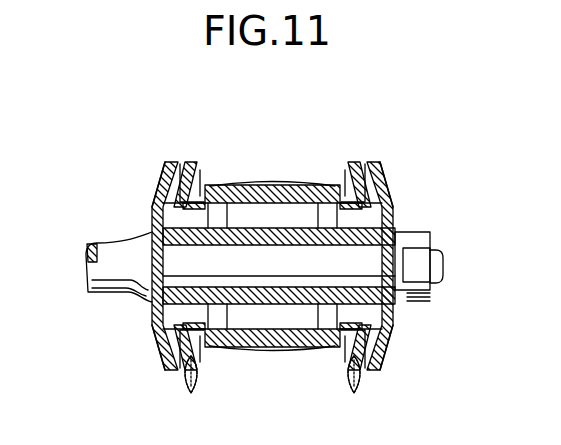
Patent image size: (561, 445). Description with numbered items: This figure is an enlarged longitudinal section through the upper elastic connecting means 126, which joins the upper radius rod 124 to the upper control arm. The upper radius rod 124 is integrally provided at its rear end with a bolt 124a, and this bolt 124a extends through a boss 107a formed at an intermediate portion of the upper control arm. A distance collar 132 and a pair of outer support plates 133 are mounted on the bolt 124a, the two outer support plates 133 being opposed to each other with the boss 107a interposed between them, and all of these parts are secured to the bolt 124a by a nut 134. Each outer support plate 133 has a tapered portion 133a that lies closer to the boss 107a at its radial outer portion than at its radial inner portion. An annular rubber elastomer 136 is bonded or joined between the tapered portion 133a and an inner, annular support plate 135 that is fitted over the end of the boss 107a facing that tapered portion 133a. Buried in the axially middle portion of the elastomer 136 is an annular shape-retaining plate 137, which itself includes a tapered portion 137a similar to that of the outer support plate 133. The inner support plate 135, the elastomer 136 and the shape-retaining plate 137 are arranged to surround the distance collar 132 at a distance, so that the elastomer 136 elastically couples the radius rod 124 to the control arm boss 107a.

The boss 107a is at (272, 348).
The upper radius rod 124 is at (122, 246).
The bolt 124a is at (292, 285).
The upper elastic connecting means 126 is at (372, 128).
The distance collar 132 is at (270, 232).
The outer support plate 133 is at (170, 161).
The tapered portion 133a is at (167, 188).
The nut 134 is at (427, 238).
The inner annular support plate 135 is at (203, 188).
The annular rubber elastomer 136 is at (191, 372).
The annular shape-retaining plate 137 is at (191, 160).
The tapered portion 137a is at (177, 328).